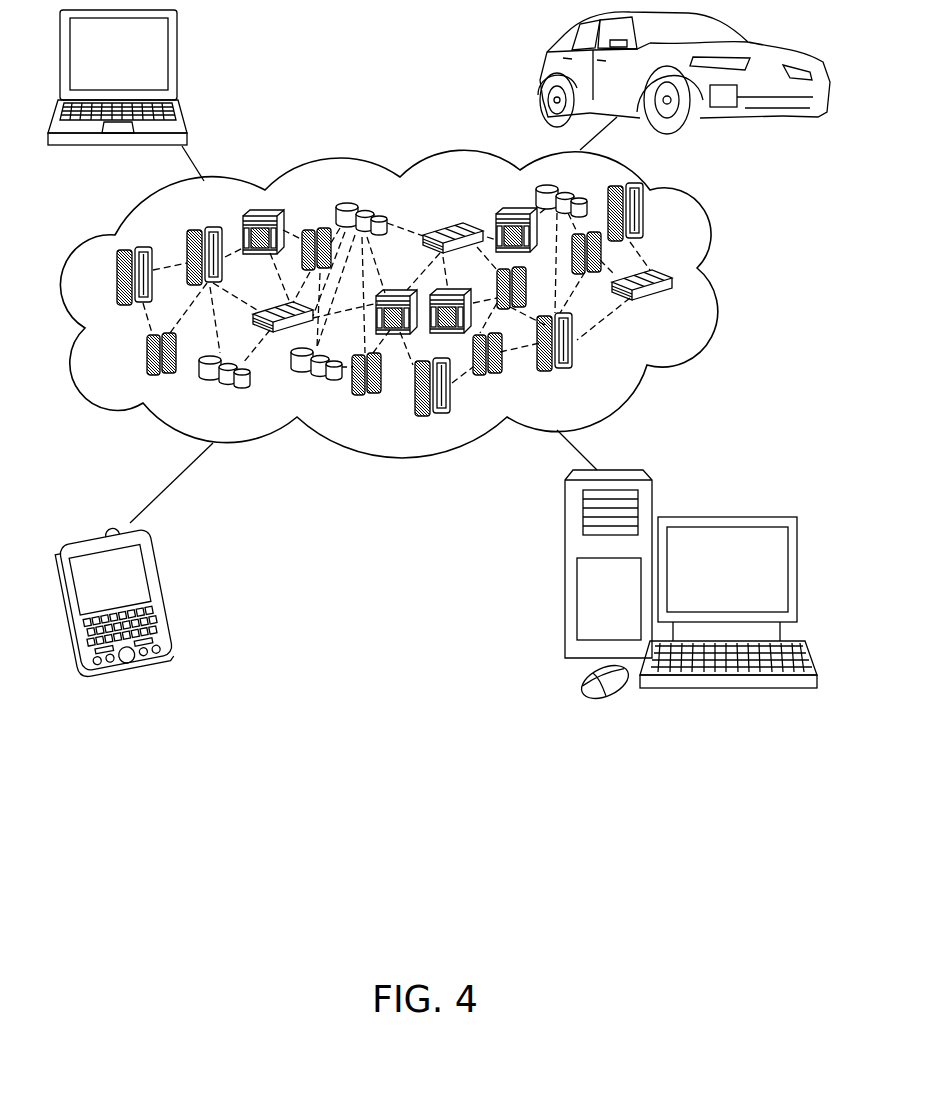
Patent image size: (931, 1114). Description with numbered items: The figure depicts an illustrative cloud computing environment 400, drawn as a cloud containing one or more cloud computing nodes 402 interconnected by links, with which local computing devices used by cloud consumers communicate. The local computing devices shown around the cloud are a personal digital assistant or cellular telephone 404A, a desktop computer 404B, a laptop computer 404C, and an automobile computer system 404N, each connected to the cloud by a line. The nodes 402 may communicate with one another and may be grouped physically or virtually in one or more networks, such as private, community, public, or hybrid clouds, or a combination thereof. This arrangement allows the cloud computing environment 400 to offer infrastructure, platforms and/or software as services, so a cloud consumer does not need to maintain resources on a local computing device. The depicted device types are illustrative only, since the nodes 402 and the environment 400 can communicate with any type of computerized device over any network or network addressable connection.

The cloud computing environment 400 is at (683, 277).
The cloud computing nodes 402 is at (680, 306).
The personal digital assistant (PDA) or cellular telephone 404A is at (158, 563).
The desktop computer 404B is at (713, 513).
The laptop computer 404C is at (177, 34).
The automobile computer system 404N is at (547, 75).